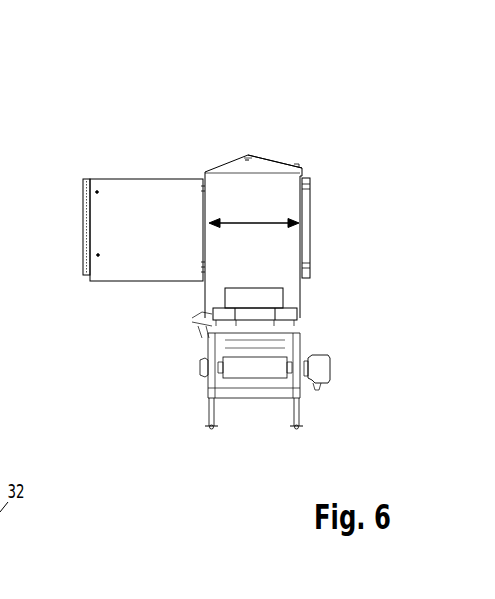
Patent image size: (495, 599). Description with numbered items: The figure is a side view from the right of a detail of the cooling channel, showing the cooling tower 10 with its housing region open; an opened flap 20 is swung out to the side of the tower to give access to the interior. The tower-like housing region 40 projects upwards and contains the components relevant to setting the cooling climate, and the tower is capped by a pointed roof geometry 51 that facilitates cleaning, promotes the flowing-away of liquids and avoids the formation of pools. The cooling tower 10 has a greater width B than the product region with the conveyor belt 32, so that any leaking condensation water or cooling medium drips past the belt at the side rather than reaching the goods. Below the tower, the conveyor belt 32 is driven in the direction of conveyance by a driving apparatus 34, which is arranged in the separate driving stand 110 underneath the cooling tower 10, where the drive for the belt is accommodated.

The cooling tower 10 is at (222, 143).
The door 20 is at (95, 270).
The conveyor belt 32 is at (234, 311).
The driving apparatus 34 is at (311, 359).
The housing region 40 is at (247, 165).
The roof geometry 51 is at (256, 160).
The driving stand 110 is at (290, 399).